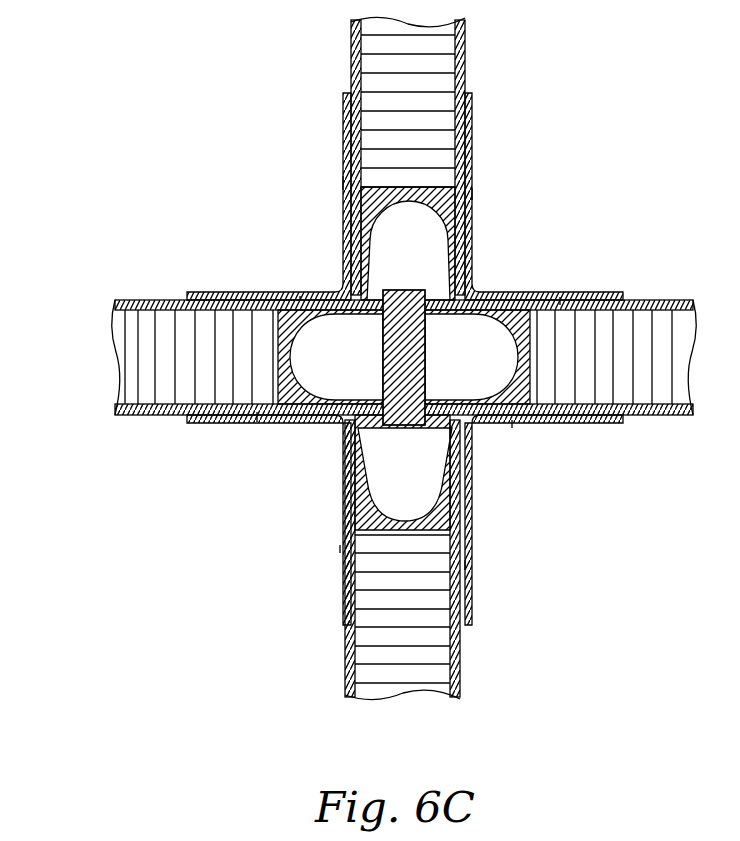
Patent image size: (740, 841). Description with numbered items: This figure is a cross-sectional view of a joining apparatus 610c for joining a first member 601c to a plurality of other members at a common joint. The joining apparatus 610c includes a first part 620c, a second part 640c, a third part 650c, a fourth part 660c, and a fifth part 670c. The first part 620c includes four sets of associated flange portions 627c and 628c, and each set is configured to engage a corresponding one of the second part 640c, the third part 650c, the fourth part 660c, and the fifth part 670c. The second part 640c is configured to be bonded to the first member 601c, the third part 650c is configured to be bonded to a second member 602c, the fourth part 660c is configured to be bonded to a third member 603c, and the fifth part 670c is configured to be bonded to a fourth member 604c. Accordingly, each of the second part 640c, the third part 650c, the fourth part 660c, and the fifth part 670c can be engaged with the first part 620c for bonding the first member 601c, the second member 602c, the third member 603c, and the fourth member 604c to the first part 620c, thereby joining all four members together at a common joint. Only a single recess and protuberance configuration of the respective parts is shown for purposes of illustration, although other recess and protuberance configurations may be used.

The first member 601c is at (142, 300).
The second member 602c is at (465, 667).
The third member 603c is at (658, 297).
The fourth member 604c is at (466, 62).
The joining apparatus 610c is at (412, 363).
The first part 620c is at (270, 298).
The flange portion 627c is at (343, 176).
The flange portion 628c is at (472, 188).
The second part 640c is at (278, 352).
The third part 650c is at (403, 535).
The fourth part 660c is at (543, 425).
The fifth part 670c is at (410, 185).